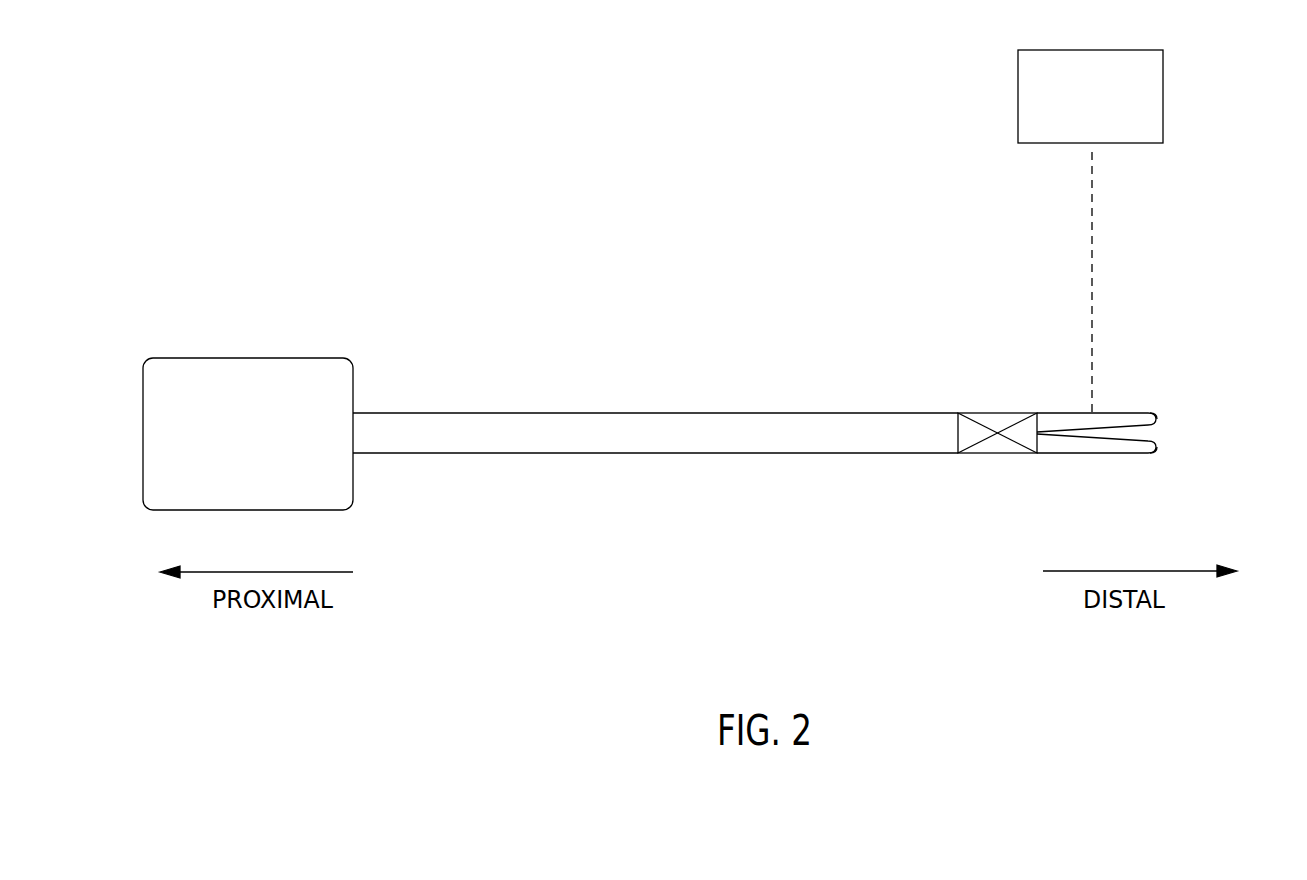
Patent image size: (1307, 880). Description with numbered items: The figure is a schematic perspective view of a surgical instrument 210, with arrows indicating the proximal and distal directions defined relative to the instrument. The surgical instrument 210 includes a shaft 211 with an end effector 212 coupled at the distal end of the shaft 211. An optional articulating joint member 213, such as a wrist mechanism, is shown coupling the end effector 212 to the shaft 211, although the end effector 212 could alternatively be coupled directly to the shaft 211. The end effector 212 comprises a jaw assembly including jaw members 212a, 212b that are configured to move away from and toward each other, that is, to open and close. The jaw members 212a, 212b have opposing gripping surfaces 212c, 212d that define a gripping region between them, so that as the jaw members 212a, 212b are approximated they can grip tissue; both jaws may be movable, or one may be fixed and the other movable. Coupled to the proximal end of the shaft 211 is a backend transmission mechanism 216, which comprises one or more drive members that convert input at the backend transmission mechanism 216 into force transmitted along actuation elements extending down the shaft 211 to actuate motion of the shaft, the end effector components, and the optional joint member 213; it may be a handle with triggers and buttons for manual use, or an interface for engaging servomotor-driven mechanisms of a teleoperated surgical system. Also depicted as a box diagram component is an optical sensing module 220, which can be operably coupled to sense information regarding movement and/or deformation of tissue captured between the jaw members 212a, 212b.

The surgical instrument 210 is at (826, 488).
The shaft 211 is at (604, 412).
The end effector 212 is at (1168, 431).
The jaw member 212a is at (1097, 412).
The jaw member 212b is at (1083, 455).
The gripping surface 212c is at (1158, 422).
The gripping surface 212d is at (1158, 444).
The articulating joint member 213 is at (990, 455).
The backend transmission mechanism 216 is at (277, 450).
The optical sensing module 220 is at (1118, 113).